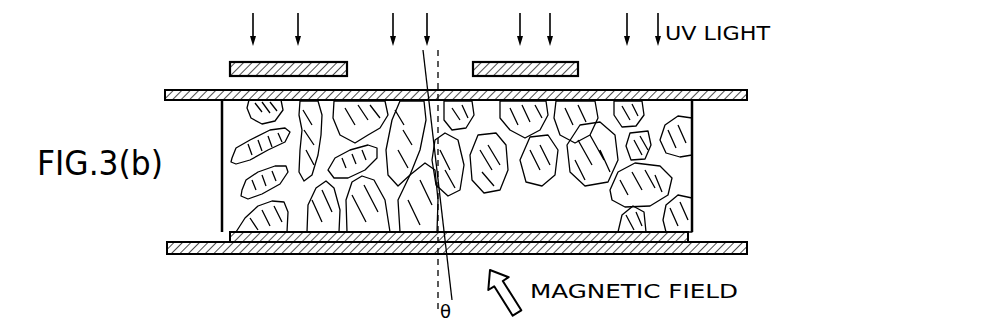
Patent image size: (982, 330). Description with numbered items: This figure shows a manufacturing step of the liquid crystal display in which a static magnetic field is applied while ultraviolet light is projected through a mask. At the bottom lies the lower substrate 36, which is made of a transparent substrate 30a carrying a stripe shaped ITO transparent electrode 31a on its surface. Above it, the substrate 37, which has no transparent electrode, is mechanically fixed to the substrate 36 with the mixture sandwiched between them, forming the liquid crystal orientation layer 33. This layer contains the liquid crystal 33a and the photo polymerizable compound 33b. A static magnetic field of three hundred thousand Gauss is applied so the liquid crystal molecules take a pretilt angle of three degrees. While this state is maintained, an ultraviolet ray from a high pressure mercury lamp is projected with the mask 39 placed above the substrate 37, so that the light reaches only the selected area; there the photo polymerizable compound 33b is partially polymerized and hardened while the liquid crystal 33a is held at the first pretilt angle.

The transparent substrate 30a is at (747, 246).
The transparent electrode 31a is at (688, 237).
The liquid crystal orientation layer 33 is at (528, 166).
The liquid crystal 33a is at (651, 148).
The photo polymerizable compound 33b is at (678, 176).
The substrate 36 is at (509, 225).
The substrate 37 is at (747, 93).
The mask 39 is at (347, 69).